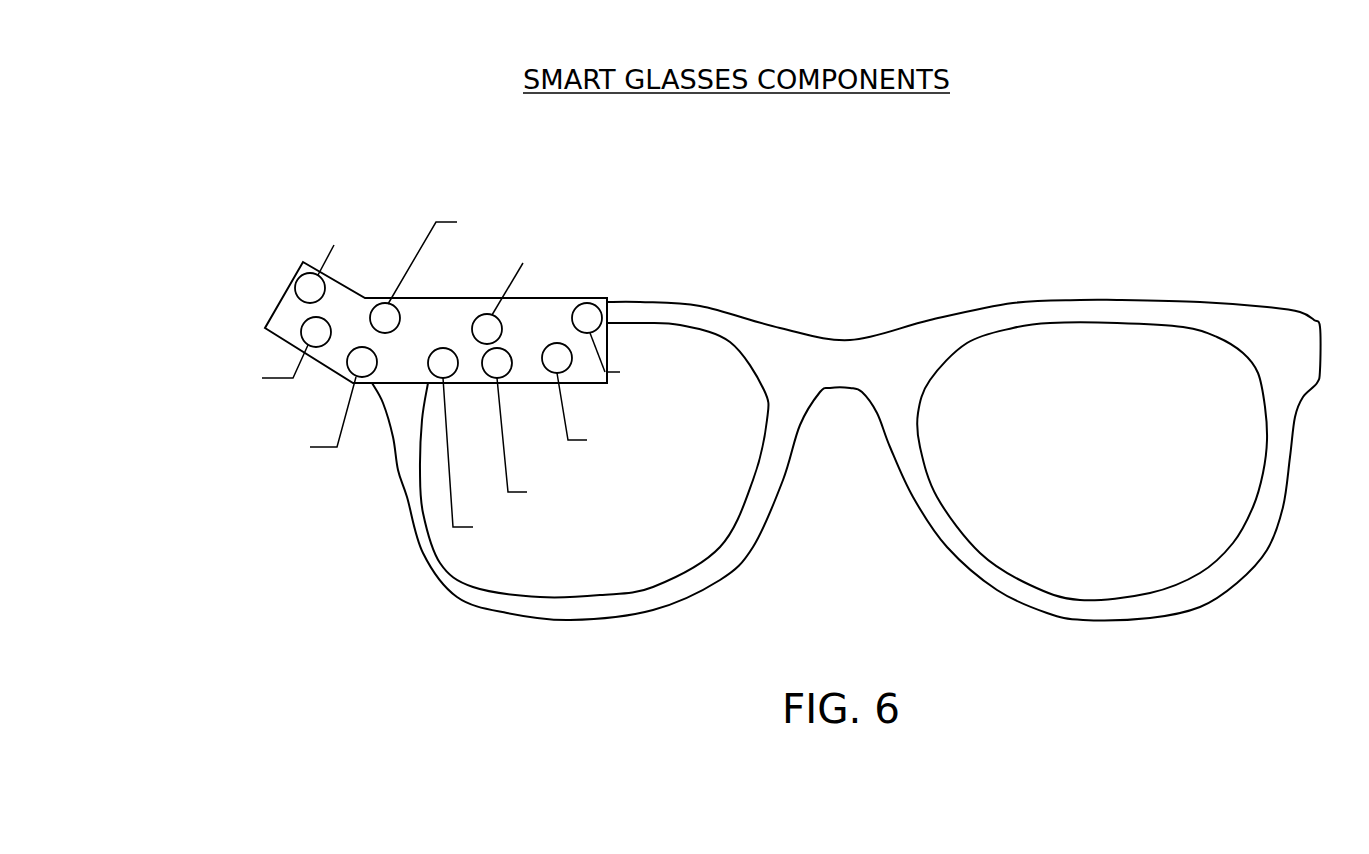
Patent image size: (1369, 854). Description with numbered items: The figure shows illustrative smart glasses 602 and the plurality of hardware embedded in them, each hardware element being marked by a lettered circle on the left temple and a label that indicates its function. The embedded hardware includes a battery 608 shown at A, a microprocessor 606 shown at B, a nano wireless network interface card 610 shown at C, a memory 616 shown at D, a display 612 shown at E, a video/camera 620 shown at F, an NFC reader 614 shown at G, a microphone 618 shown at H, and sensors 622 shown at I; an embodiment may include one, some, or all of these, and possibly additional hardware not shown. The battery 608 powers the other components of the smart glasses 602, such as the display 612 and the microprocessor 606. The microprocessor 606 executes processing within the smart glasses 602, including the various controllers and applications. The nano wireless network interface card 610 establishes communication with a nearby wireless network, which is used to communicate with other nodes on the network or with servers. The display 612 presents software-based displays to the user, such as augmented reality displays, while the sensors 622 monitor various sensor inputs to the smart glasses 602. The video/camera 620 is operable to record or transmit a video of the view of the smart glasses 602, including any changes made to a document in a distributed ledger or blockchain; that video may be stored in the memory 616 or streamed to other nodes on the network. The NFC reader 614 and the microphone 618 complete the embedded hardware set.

The smart glasses 602 is at (1117, 298).
The microprocessor 606 is at (167, 360).
The battery 608 is at (297, 232).
The nano wireless network interface card 610 is at (908, 227).
The display 612 is at (623, 268).
The NFC reader 614 is at (228, 463).
The memory 616 is at (530, 540).
The microphone 618 is at (638, 507).
The video/camera 620 is at (670, 442).
The sensors 622 is at (723, 375).